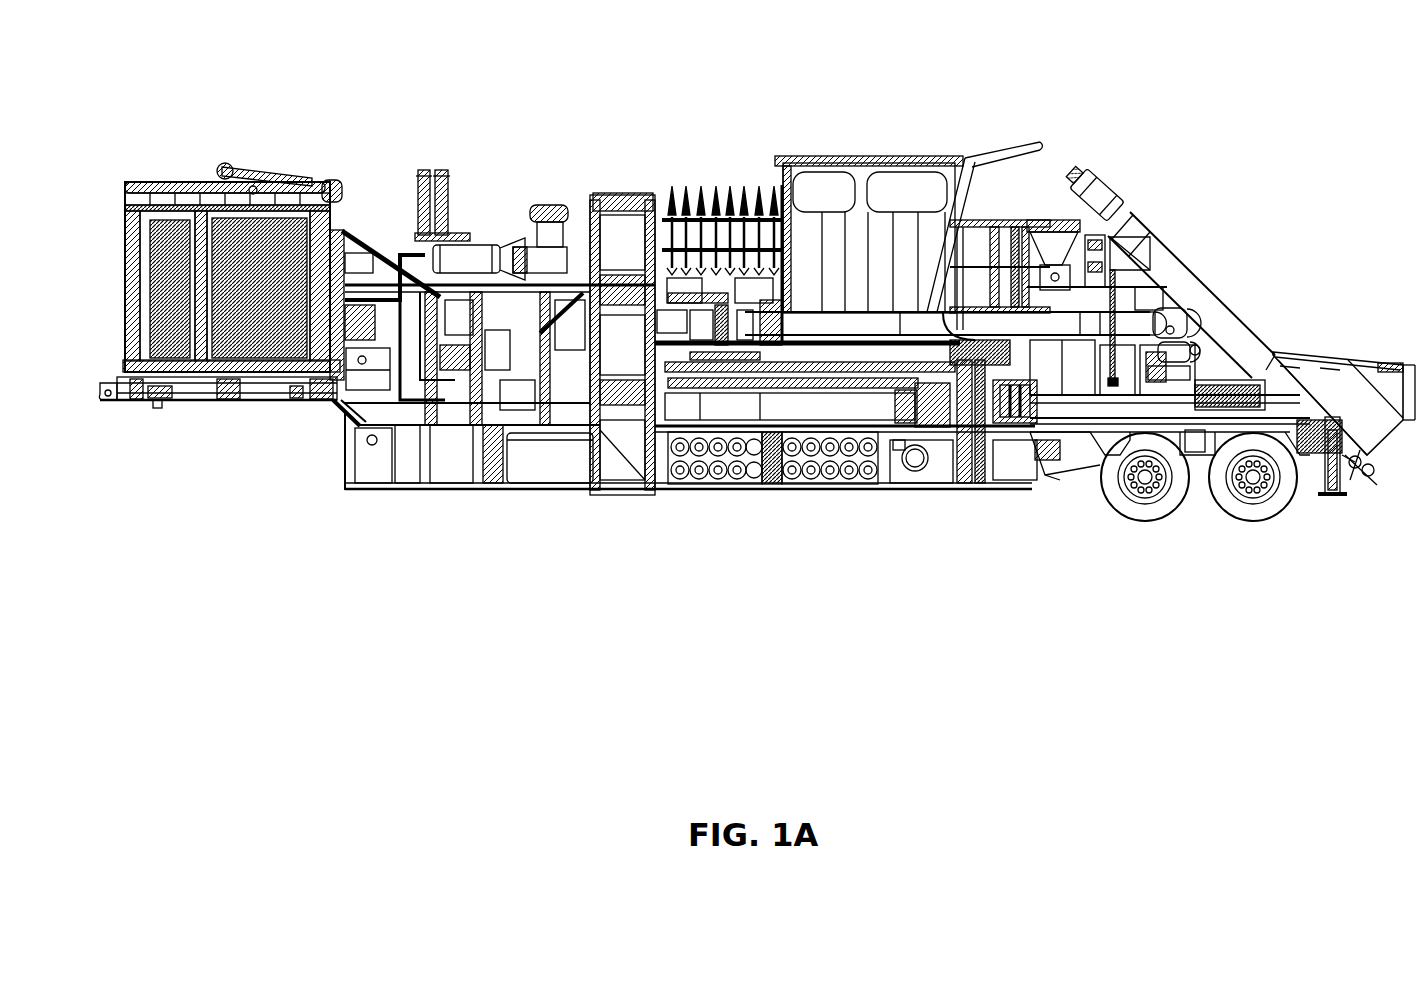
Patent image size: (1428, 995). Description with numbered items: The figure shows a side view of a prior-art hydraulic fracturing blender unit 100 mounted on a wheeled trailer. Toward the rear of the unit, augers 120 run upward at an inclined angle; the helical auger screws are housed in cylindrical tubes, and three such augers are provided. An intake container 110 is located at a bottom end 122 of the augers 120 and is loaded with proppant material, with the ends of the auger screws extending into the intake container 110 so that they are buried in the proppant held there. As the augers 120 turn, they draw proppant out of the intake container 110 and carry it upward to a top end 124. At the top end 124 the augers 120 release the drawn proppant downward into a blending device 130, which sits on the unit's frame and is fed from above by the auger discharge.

The hydraulic fracturing blender unit 100 is at (411, 150).
The intake container 110 is at (1328, 360).
The augers 120 is at (1196, 278).
The bottom end 122 is at (1367, 470).
The top end 124 is at (1127, 258).
The blending device 130 is at (1075, 363).